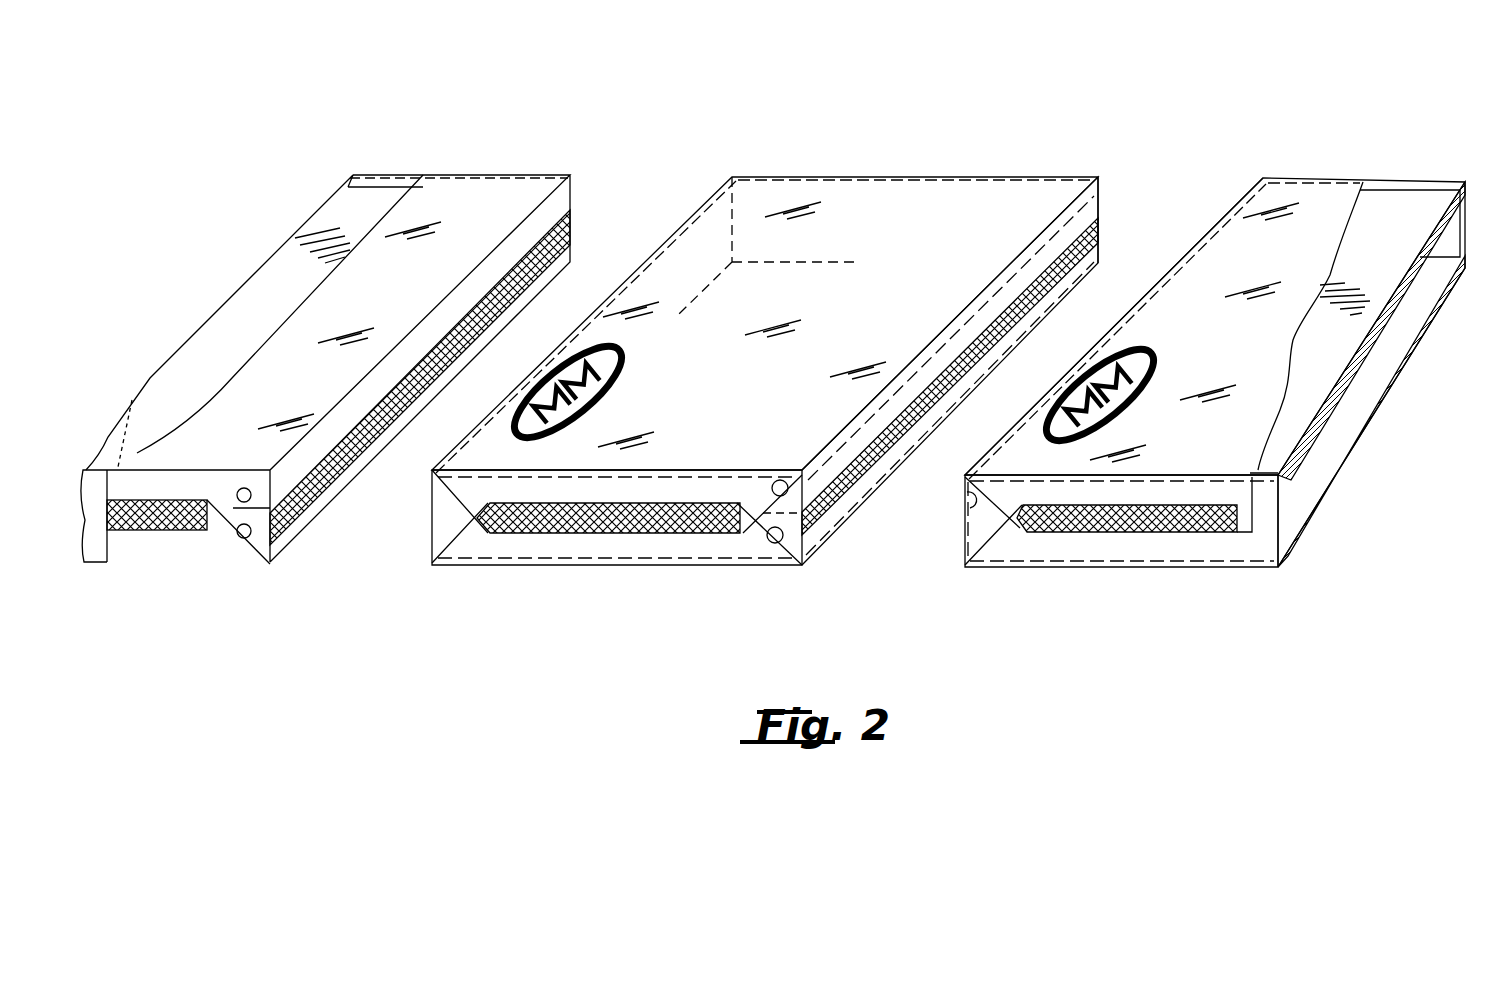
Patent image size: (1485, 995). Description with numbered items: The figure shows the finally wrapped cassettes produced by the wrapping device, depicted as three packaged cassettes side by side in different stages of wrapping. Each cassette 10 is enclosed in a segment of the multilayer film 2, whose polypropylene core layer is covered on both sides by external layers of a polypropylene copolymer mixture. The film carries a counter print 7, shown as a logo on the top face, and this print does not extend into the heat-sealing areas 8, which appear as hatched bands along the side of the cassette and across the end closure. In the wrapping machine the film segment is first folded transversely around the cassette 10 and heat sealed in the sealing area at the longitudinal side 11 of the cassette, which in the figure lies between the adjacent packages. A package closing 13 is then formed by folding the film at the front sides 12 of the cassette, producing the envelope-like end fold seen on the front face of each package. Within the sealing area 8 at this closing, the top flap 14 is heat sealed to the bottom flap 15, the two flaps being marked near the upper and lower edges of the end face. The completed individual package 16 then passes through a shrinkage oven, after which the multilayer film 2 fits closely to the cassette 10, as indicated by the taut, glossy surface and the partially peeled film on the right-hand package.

The multilayer film 2 is at (254, 345).
The counter print 7 is at (548, 378).
The heat-sealing area 8 is at (330, 490).
The cassette 10 is at (360, 200).
The longitudinal side 11 is at (1080, 216).
The front side 12 is at (93, 549).
The package closing 13 is at (204, 544).
The top flap 14 is at (246, 500).
The bottom flap 15 is at (257, 545).
The individual package 16 is at (321, 192).